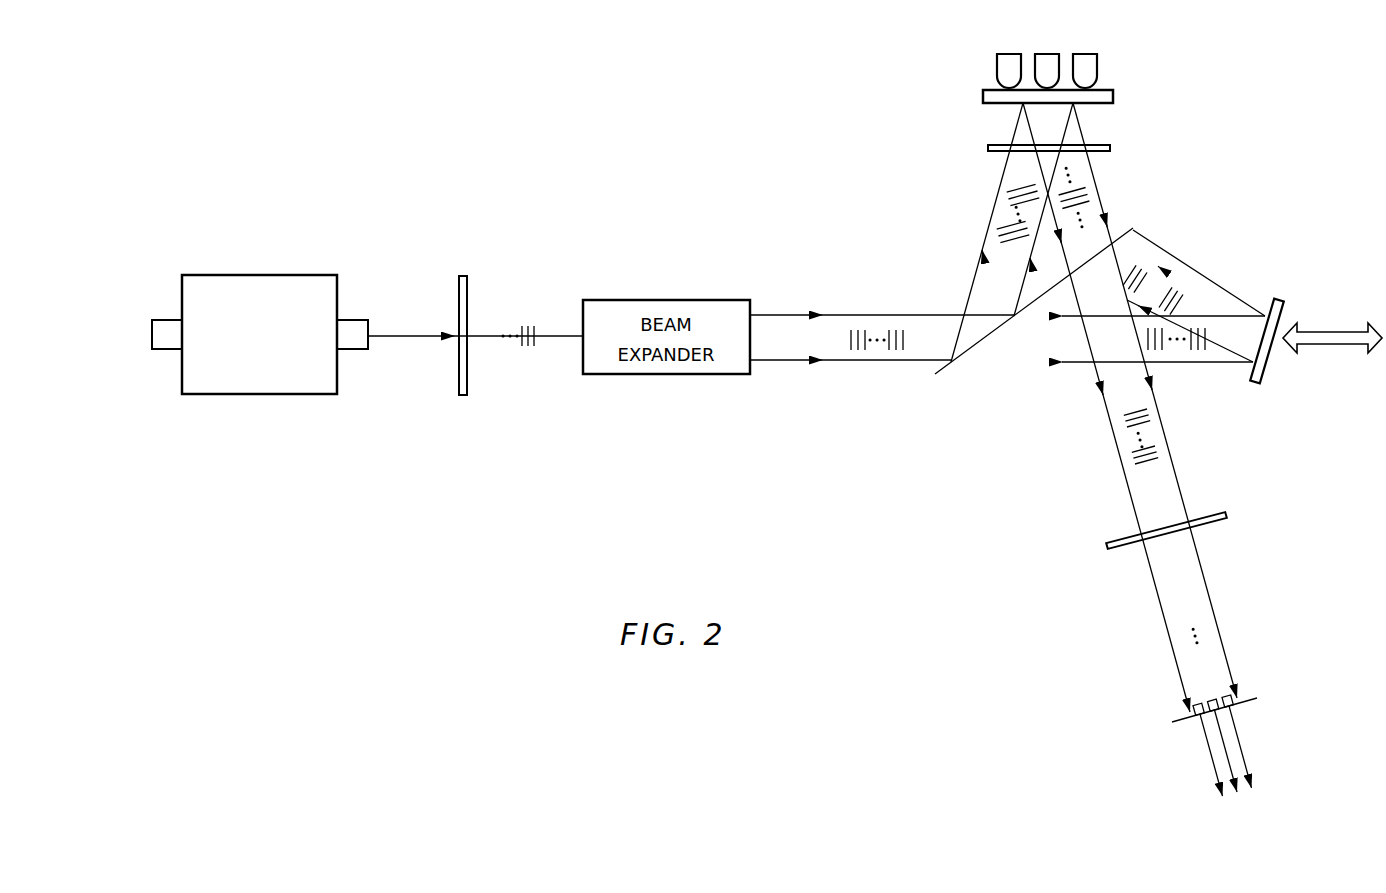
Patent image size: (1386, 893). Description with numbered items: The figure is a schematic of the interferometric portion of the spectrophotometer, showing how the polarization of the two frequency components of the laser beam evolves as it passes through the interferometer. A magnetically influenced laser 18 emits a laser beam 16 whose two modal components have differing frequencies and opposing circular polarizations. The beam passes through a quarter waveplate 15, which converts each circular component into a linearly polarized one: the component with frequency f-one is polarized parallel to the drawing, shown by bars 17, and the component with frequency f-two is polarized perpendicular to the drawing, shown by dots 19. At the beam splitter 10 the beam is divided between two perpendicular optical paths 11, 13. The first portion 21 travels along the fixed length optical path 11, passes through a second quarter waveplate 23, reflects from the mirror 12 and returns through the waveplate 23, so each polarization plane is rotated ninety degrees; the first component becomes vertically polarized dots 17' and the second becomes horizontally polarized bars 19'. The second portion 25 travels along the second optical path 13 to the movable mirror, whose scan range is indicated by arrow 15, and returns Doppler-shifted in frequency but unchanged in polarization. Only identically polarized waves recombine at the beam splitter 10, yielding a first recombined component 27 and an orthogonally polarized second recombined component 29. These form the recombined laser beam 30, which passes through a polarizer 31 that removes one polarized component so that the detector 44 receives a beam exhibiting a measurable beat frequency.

The beam splitter 10 is at (945, 376).
The fixed length optical path 11 is at (918, 123).
The mirror 12 is at (982, 94).
The second optical path 13 is at (1243, 243).
The quarter waveplate 15 is at (457, 380).
The laser beam 16 is at (388, 335).
The bars (first modal component) 17 is at (870, 277).
The dots (rotated first modal component) 17' is at (1103, 189).
The magnetically influenced laser 18 is at (295, 276).
The dots (second modal component) 19 is at (834, 297).
The bars (rotated second modal component) 19' is at (1096, 194).
The first portion of the laser beam 21 is at (972, 288).
The second quarter waveplate 23 is at (990, 146).
The second portion of the laser beam 25 is at (1264, 300).
The first recombined component of the laser beam 27 is at (1120, 422).
The second recombined component of the laser beam 29 is at (1135, 445).
The recombined laser beam 30 is at (1135, 527).
The polarizer 31 is at (1105, 548).
The detector 44 is at (1230, 697).